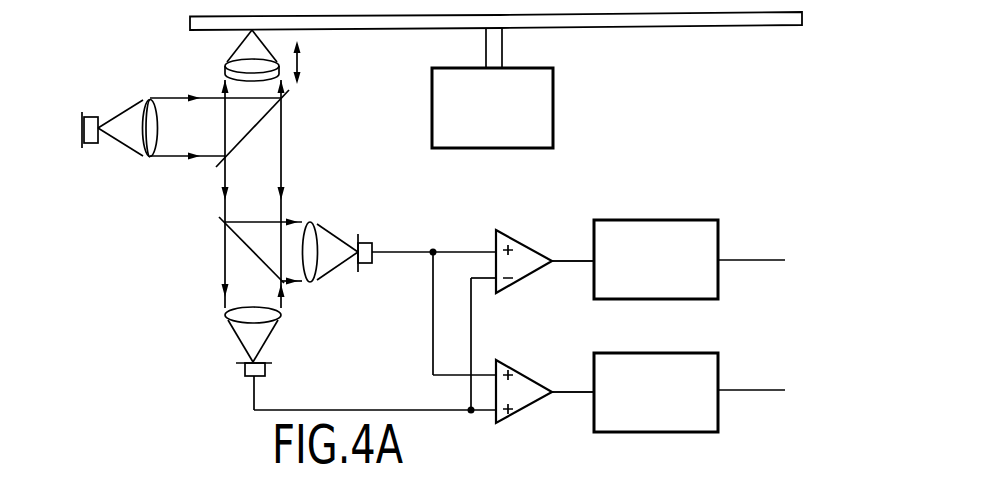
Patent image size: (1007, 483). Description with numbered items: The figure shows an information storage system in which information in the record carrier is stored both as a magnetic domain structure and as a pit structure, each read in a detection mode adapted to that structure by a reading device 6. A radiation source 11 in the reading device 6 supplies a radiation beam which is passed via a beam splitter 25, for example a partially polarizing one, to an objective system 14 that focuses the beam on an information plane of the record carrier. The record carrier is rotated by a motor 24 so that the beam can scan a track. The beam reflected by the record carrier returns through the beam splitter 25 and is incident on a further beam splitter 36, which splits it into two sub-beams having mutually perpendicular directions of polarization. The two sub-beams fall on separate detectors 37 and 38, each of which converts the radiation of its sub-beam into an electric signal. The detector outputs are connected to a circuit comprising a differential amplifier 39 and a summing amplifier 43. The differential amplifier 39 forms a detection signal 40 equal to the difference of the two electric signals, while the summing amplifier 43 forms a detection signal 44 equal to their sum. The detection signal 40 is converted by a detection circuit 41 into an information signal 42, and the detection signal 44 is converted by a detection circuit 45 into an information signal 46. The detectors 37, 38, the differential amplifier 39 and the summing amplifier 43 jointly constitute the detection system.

The reading device 6 is at (858, 242).
The radiation source 11 is at (92, 114).
The objective system 14 is at (226, 66).
The motor 24 is at (546, 113).
The beam splitter 25 is at (283, 91).
The beam splitter 36 is at (219, 218).
The detector 37 is at (366, 266).
The detector 38 is at (268, 370).
The differential amplifier 39 is at (527, 277).
The detection signal 40 is at (572, 263).
The detection circuit 41 is at (670, 292).
The information signal 42 is at (752, 261).
The summing amplifier 43 is at (527, 407).
The detection signal 44 is at (571, 394).
The detection circuit 45 is at (670, 424).
The information signal 46 is at (752, 391).